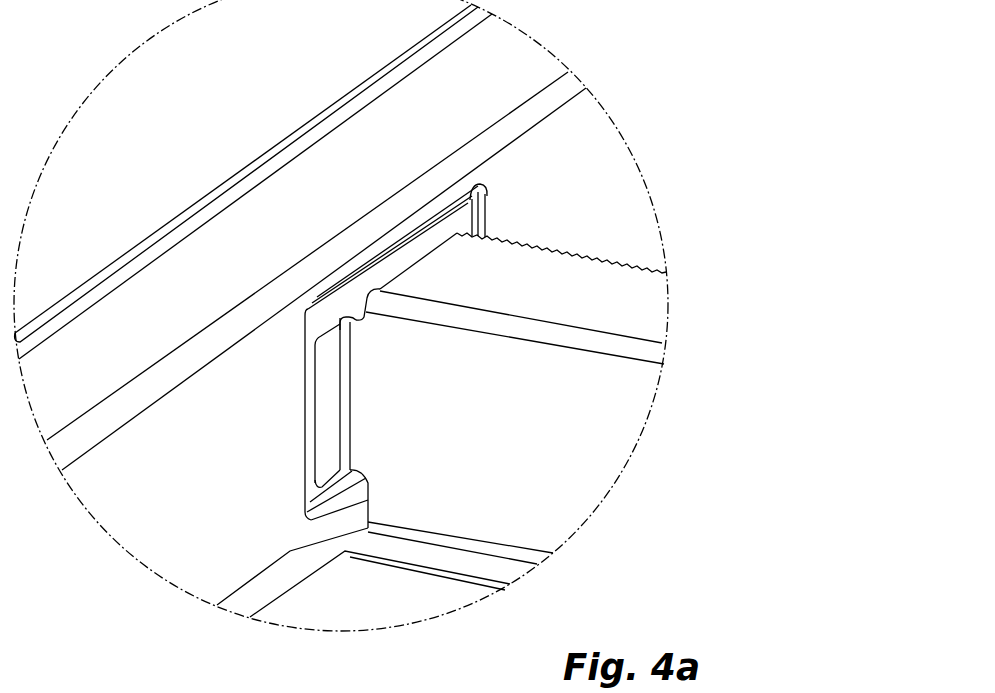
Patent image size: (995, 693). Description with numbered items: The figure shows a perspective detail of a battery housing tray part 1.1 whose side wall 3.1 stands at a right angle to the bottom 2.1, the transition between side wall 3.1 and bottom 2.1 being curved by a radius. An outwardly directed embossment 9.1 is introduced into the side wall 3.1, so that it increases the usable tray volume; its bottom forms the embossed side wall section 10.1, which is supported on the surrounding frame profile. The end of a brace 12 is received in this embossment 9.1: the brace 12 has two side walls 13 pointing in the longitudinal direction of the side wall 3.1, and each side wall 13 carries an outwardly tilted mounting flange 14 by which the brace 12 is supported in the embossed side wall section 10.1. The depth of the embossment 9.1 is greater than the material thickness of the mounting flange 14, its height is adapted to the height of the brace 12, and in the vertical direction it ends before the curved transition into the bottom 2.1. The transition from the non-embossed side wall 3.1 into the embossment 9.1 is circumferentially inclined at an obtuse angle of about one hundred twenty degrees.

The tray part 1.1 is at (392, 170).
The bottom 2.1 is at (385, 602).
The side wall 3.1 is at (590, 212).
The embossment 9.1 is at (475, 199).
The embossed side wall section 10.1 is at (368, 278).
The brace 12 is at (568, 287).
The side wall 13 is at (525, 454).
The mounting flange 14 is at (328, 372).